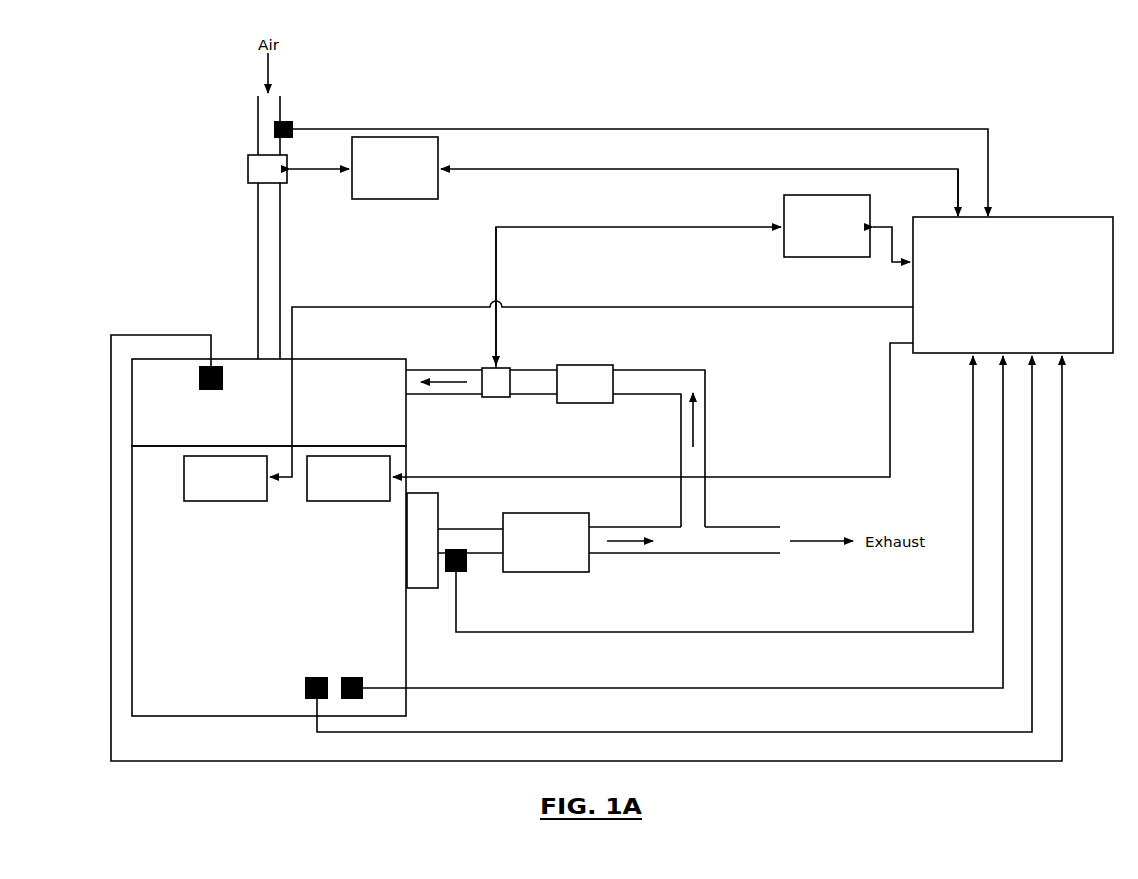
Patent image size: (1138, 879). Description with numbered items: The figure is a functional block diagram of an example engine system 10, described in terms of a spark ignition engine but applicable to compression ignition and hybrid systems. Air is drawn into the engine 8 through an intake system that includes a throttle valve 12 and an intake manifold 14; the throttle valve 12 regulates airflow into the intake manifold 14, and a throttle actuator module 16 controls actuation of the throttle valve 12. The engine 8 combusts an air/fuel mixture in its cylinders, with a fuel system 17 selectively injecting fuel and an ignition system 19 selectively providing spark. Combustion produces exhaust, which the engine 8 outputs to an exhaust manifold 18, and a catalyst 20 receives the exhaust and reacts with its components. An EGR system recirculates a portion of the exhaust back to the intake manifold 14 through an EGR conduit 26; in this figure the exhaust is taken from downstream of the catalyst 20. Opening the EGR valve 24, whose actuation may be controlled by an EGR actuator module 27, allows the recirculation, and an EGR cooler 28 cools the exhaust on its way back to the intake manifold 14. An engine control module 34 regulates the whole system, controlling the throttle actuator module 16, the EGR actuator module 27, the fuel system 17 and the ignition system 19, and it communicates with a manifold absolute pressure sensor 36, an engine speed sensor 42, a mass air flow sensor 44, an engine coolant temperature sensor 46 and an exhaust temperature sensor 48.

The engine system 10 is at (86, 40).
The engine 8 is at (405, 645).
The throttle valve 12 is at (248, 168).
The intake manifold 14 is at (332, 359).
The throttle actuator module 16 is at (352, 195).
The fuel system 17 is at (340, 501).
The exhaust manifold 18 is at (438, 511).
The ignition system 19 is at (216, 501).
The catalyst 20 is at (546, 513).
The EGR valve 24 is at (496, 397).
The EGR conduit 26 is at (706, 388).
The EGR actuator module 27 is at (822, 257).
The EGR cooler 28 is at (581, 403).
The engine control module 34 is at (1048, 217).
The manifold absolute pressure sensor 36 is at (211, 390).
The engine speed sensor 42 is at (351, 677).
The mass air flow sensor 44 is at (290, 121).
The engine coolant temperature sensor 46 is at (317, 677).
The exhaust temperature sensor 48 is at (467, 562).